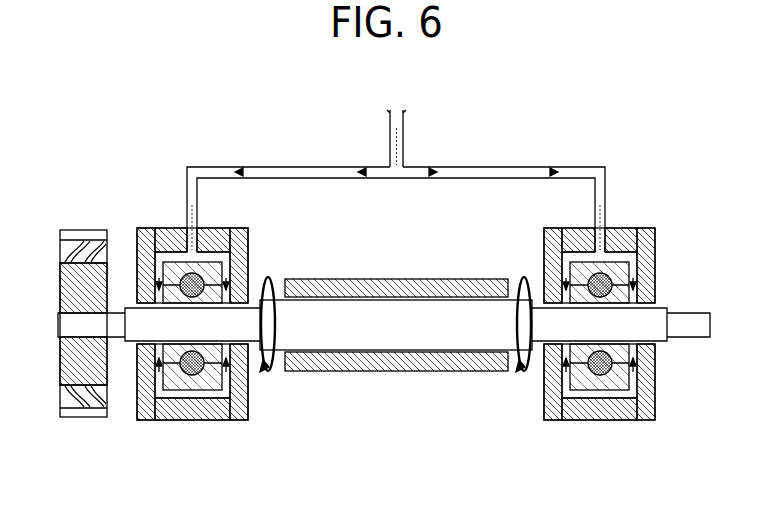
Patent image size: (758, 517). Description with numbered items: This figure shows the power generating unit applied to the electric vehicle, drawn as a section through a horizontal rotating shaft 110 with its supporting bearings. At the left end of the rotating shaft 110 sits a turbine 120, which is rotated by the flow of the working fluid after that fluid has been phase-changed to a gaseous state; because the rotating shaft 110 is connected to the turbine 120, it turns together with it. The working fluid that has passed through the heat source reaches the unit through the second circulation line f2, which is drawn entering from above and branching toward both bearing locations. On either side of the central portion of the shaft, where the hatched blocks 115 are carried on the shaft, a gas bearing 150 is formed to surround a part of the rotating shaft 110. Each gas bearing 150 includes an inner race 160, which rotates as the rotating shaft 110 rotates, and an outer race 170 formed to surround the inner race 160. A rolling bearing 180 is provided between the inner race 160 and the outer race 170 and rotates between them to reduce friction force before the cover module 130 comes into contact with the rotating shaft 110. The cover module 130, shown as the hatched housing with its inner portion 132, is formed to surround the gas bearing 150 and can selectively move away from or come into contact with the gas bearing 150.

The rotating shaft 110 is at (437, 340).
The rotor core 115 is at (372, 372).
The turbine 120 is at (80, 226).
The cover module 130 is at (162, 410).
The bearing seat 132 is at (150, 395).
The gas bearing 150 is at (175, 255).
The inner race 160 is at (245, 358).
The outer race 170 is at (222, 420).
The rolling bearing 180 is at (195, 385).
The second circulation line f2 is at (404, 125).